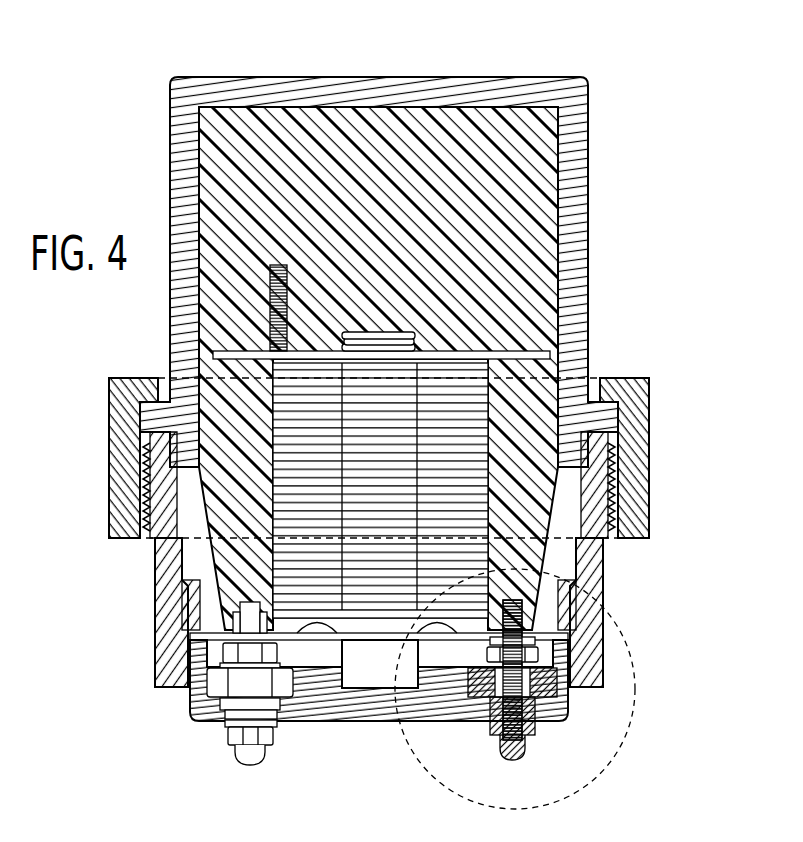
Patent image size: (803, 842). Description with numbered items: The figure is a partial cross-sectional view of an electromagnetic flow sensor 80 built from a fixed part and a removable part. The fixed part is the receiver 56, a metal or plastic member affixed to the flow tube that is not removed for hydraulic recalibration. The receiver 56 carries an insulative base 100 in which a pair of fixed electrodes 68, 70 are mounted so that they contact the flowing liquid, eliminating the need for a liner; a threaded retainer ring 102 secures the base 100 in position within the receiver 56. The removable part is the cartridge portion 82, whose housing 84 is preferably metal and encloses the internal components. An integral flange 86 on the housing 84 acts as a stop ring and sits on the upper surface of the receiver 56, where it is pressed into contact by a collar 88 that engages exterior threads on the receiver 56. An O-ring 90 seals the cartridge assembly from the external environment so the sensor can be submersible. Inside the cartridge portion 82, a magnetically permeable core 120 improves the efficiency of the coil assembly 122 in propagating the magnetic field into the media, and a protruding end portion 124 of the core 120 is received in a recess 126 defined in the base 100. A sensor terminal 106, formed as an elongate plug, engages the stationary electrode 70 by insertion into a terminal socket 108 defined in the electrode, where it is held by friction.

The receiver 56 is at (517, 684).
The fixed electrode 68 is at (240, 762).
The fixed electrode 70 is at (520, 762).
The electromagnetic flow sensor 80 is at (420, 240).
The cartridge portion 82 is at (375, 240).
The housing 84 is at (168, 128).
The integral flange 86 is at (615, 415).
The collar 88 is at (109, 430).
The O-ring 90 is at (590, 447).
The insulative base 100 is at (337, 724).
The threaded retainer ring 102 is at (178, 563).
The sensor terminal 106 is at (520, 740).
The terminal socket 108 is at (514, 742).
The magnetically permeable core 120 is at (320, 432).
The coil assembly 122 is at (487, 393).
The protruding end portion 124 is at (376, 672).
The recess 126 is at (150, 472).